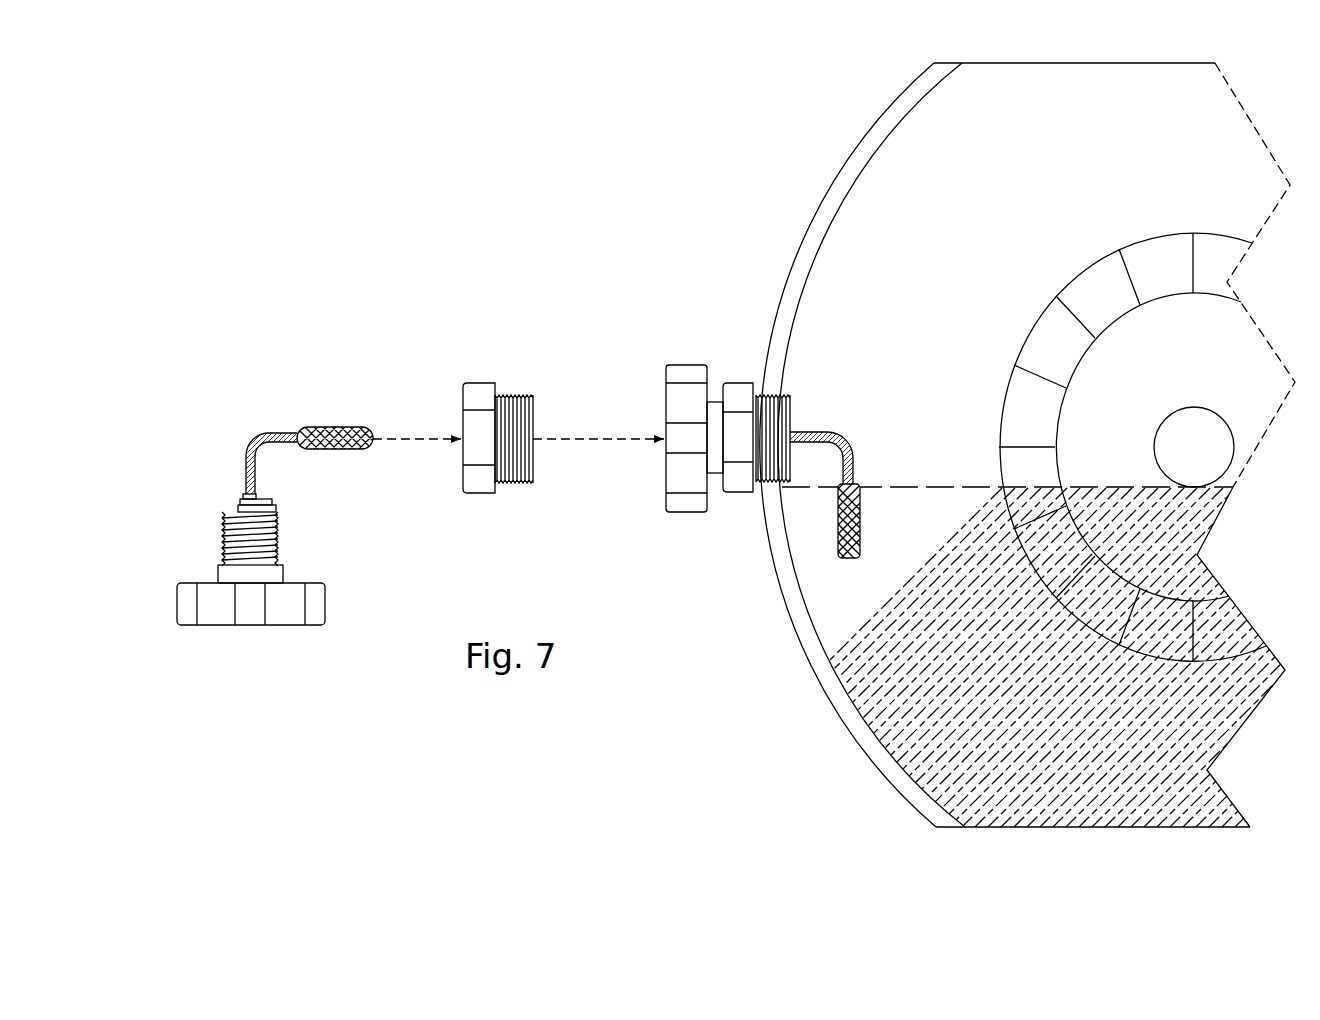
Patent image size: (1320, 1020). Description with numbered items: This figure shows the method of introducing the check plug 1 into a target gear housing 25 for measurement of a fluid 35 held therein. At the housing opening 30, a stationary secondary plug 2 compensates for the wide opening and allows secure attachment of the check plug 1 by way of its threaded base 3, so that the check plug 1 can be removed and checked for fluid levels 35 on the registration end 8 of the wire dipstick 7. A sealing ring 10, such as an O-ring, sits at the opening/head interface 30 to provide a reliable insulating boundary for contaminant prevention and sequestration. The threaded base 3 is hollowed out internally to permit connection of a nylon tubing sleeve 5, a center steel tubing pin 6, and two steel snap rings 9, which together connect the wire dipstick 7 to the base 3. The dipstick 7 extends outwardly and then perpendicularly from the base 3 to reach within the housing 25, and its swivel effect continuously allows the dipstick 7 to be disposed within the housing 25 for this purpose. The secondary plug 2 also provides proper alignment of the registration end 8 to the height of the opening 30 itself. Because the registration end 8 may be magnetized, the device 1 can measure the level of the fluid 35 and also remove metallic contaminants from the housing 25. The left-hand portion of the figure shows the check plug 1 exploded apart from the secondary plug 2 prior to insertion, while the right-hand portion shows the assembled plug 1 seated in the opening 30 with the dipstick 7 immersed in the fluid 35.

The check plug 1 is at (442, 482).
The stationary secondary plug 2 is at (584, 396).
The threaded base 3 is at (302, 539).
The nylon tubing sleeve 5 is at (310, 510).
The center steel tubing pin 6 is at (206, 461).
The wire dipstick 7 is at (538, 431).
The registration end 8 is at (508, 440).
The steel snap rings 9 is at (311, 482).
The sealing ring 10 is at (470, 444).
The housing 25 is at (1003, 445).
The housing opening 30 is at (737, 495).
The fluid 35 is at (980, 640).